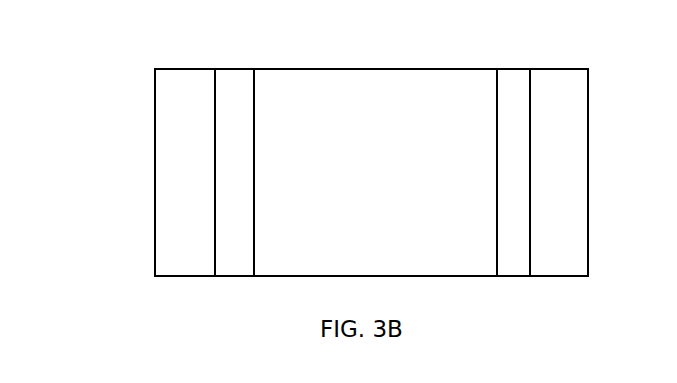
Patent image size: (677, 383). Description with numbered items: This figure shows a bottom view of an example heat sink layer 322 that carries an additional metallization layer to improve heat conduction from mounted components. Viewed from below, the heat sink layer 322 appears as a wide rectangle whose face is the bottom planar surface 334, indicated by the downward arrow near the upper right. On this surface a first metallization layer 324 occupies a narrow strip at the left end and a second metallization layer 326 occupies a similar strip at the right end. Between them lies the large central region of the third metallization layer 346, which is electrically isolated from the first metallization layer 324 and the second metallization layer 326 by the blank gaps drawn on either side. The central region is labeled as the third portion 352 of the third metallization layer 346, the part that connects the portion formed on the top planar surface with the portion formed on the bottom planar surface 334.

The heat sink layer 322 is at (146, 49).
The first metallization layer 324 is at (155, 118).
The second metallization layer 326 is at (585, 135).
The bottom planar surface 334 is at (517, 86).
The third metallization layer 346 is at (280, 68).
The third portion 352 is at (398, 196).